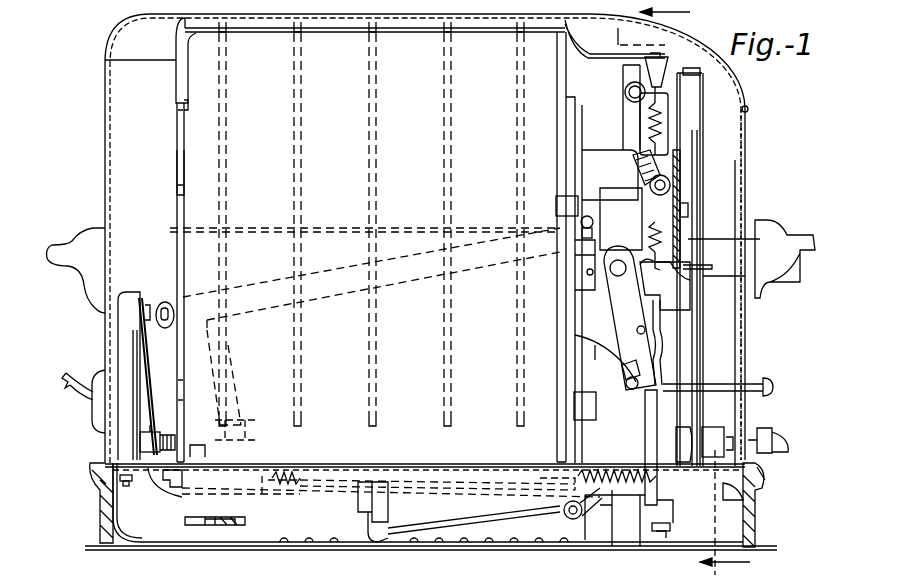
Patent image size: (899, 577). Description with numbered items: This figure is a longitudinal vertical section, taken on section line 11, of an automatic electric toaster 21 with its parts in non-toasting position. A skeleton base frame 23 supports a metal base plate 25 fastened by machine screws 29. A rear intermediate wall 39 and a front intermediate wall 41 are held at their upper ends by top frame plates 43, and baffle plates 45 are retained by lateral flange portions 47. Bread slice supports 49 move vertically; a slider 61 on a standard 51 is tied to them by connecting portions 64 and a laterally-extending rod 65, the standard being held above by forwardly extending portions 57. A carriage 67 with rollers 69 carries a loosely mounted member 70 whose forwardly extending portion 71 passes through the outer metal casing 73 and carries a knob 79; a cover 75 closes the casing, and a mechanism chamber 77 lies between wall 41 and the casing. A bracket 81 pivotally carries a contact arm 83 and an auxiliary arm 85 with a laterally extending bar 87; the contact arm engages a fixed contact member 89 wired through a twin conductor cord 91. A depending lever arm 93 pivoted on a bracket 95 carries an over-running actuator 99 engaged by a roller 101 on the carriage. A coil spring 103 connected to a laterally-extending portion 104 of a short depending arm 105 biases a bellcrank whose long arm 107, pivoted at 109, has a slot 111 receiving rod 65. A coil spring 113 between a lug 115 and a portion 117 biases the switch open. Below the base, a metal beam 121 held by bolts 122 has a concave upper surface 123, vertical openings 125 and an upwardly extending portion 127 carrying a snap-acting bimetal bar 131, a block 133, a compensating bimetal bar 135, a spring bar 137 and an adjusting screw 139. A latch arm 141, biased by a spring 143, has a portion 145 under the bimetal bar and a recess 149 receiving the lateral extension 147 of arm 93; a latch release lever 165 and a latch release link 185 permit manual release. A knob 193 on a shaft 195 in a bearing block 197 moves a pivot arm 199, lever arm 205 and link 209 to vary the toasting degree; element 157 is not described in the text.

The section line 11 is at (709, 289).
The automatic electric toaster 21 is at (765, 154).
The skeleton base frame 23 is at (100, 525).
The metal base plate 25 is at (342, 463).
The short machine screws 29 is at (757, 518).
The rear intermediate wall 39 is at (177, 148).
The front intermediate wall 41 is at (575, 115).
The top frame plates 43 is at (400, 30).
The baffle plates 45 is at (200, 50).
The lateral flange portions 47 is at (185, 128).
The bread slice supports 49 is at (405, 228).
The standard 51 is at (650, 450).
The forwardly extending portions 57 is at (590, 56).
The slider 61 is at (640, 115).
The connecting portions 64 is at (582, 166).
The laterally-extending rod 65 is at (588, 215).
The carriage 67 is at (682, 170).
The rollers 69 is at (682, 105).
The member 70 is at (690, 222).
The forwardly extending portion 71 is at (730, 243).
The outer metal casing 73 is at (745, 130).
The cover 75 is at (740, 78).
The mechanism chamber 77 is at (735, 195).
The knob 79 is at (788, 237).
The bracket 81 is at (585, 290).
The contact arm 83 is at (656, 372).
The auxiliary arm 85 is at (630, 340).
The laterally extending bar 87 is at (618, 360).
The fixed contact member 89 is at (590, 420).
The twin conductor cord 91 is at (80, 412).
The depending lever arm 93 is at (640, 160).
The bracket 95 is at (640, 72).
The over-running actuator 99 is at (665, 298).
The roller 101 is at (668, 180).
The coil spring 103 is at (285, 476).
The laterally-extending portion 104 is at (250, 435).
The short depending arm 105 is at (235, 400).
The long arm 107 is at (240, 285).
The pivot 109 is at (165, 302).
The slot 111 is at (556, 212).
The coil spring 113 is at (660, 125).
The lug 115 is at (690, 285).
The portion 117 is at (662, 70).
The metal beam 121 is at (262, 545).
The bolts 122 is at (128, 488).
The concave upper surface 123 is at (306, 500).
The vertical openings 125 is at (309, 546).
The upwardly extending portion 127 is at (122, 323).
The snap-acting bimetal bar 131 is at (462, 478).
The block 133 is at (184, 480).
The compensating bimetal bar 135 is at (148, 365).
The spring bar 137 is at (135, 365).
The adjusting screw 139 is at (140, 446).
The latch arm 141 is at (446, 525).
The spring 143 is at (575, 518).
The upwardly and laterally extending portion 145 is at (388, 509).
The lateral extension 147 is at (665, 508).
The recess 149 is at (630, 546).
The bracket 157 is at (230, 474).
The latch release lever 165 is at (762, 378).
The latch release link 185 is at (703, 90).
The knob 193 is at (785, 440).
The shaft 195 is at (740, 440).
The bearing block 197 is at (715, 427).
The pivot arm 199 is at (686, 427).
The lever arm 205 is at (212, 524).
The link 209 is at (240, 518).